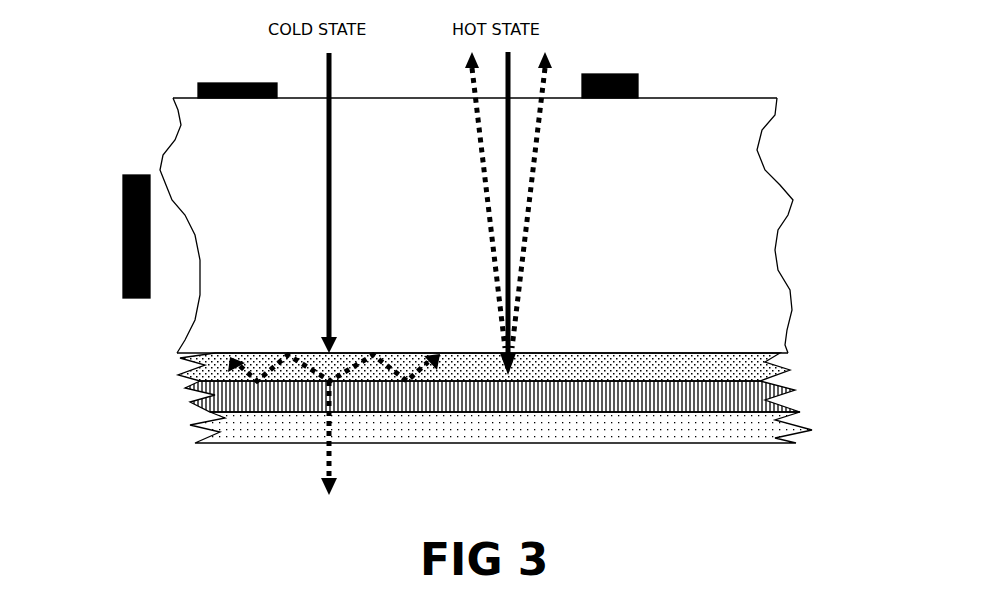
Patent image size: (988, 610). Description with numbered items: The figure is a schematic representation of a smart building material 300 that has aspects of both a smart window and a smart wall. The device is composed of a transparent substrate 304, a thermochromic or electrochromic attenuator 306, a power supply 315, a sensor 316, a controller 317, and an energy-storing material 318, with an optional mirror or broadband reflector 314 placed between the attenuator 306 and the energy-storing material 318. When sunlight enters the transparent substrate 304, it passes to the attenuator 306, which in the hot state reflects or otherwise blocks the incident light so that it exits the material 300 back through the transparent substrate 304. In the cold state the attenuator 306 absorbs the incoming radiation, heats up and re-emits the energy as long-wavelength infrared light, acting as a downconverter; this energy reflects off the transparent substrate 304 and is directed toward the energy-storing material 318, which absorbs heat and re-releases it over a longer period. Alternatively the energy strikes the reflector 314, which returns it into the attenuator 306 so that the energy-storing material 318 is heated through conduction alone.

The smart building material 300 is at (830, 112).
The transparent substrate 304 is at (752, 210).
The thermochromic or electrochromic attenuator 306 is at (175, 373).
The mirror or broadband reflector 314 is at (173, 390).
The power supply 315 is at (195, 88).
The sensor 316 is at (640, 85).
The controller 317 is at (120, 262).
The energy-storing material 318 is at (223, 440).